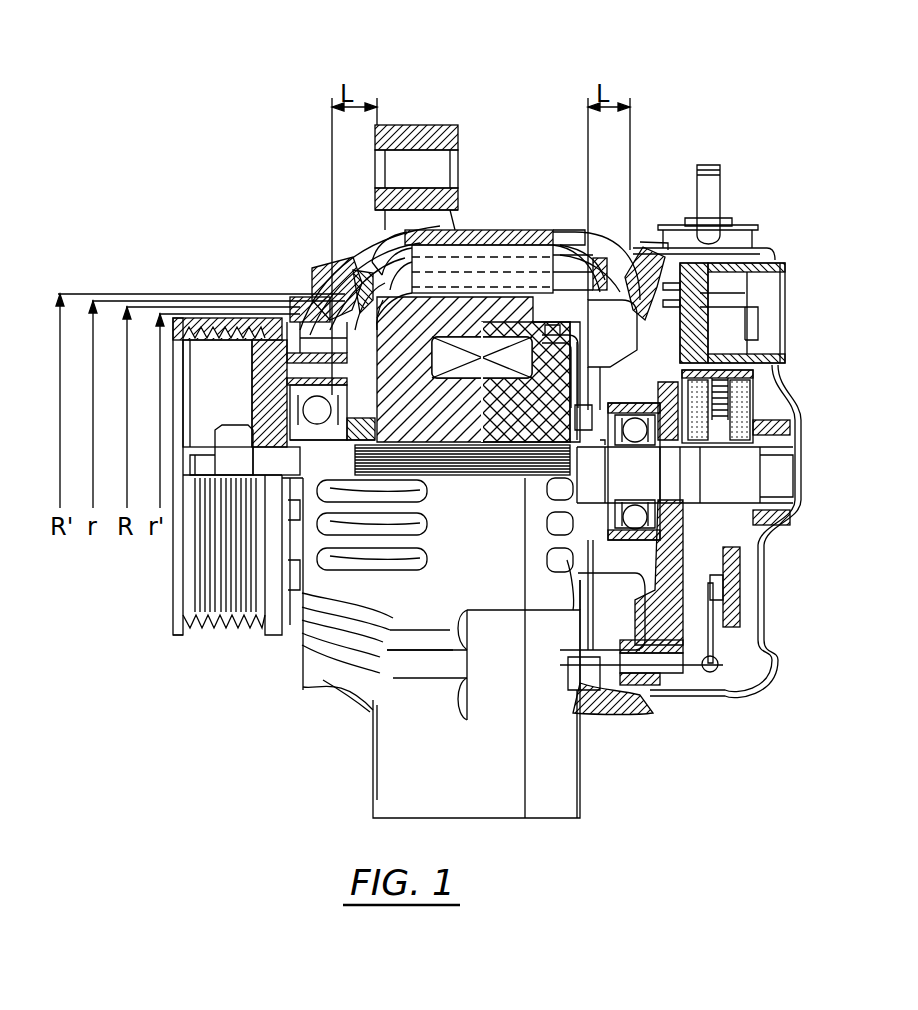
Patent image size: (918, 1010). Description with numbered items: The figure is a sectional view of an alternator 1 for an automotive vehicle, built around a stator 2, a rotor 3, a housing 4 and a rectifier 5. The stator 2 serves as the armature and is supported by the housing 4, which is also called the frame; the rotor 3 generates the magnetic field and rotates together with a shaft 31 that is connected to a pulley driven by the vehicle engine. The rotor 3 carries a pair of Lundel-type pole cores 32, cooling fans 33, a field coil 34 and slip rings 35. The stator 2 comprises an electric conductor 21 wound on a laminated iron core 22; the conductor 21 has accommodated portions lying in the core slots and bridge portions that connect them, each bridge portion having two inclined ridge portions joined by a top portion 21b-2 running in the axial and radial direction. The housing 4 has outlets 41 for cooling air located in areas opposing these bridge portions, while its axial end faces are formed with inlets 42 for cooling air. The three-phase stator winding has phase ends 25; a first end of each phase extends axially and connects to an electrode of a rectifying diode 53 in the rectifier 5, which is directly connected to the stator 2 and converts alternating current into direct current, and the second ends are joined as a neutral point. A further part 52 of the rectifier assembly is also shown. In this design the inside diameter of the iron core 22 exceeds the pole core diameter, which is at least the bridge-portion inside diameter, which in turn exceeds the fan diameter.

The alternator 1 is at (488, 82).
The stator 2 is at (560, 244).
The electric conductor 21 is at (383, 267).
The iron core 22 is at (485, 252).
The top portion 21b-2 is at (312, 278).
The rotor 3 is at (606, 382).
The housing 4 is at (338, 330).
The rectifier 5 is at (765, 635).
The phase ends 25 is at (660, 667).
The shaft 31 is at (265, 468).
The Lundel-type pole cores 32 is at (507, 432).
The cooling fans 33 is at (330, 330).
The field coil 34 is at (487, 335).
The slip rings 35 is at (740, 492).
The outlets 41 is at (360, 247).
The inlets 42 is at (300, 330).
The regulator 52 is at (730, 590).
The rectifying diode 53 is at (710, 672).